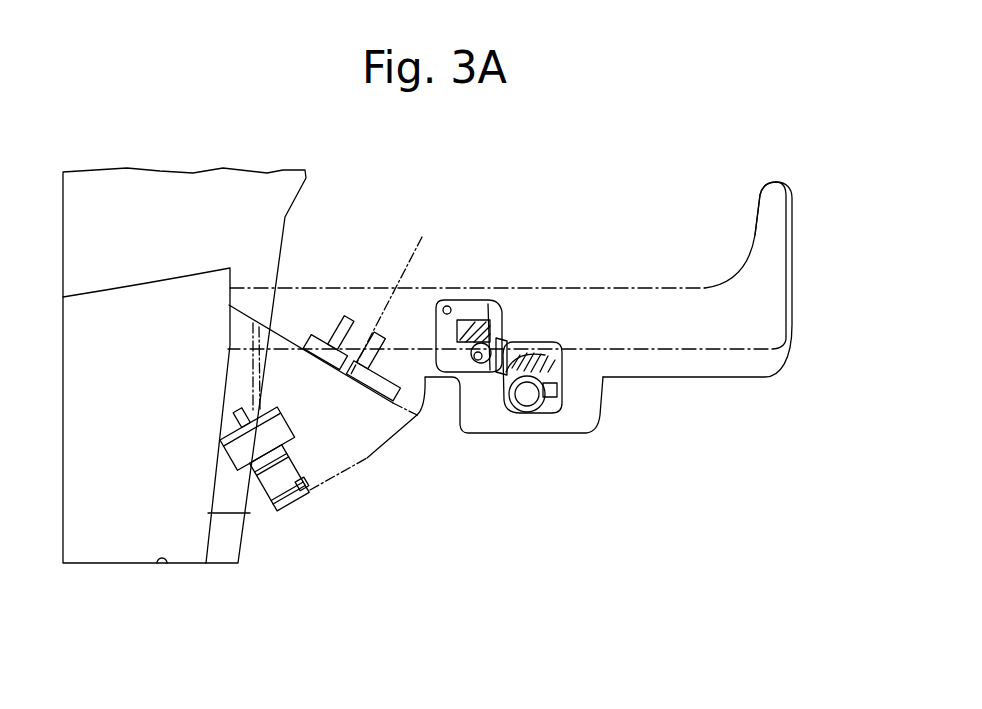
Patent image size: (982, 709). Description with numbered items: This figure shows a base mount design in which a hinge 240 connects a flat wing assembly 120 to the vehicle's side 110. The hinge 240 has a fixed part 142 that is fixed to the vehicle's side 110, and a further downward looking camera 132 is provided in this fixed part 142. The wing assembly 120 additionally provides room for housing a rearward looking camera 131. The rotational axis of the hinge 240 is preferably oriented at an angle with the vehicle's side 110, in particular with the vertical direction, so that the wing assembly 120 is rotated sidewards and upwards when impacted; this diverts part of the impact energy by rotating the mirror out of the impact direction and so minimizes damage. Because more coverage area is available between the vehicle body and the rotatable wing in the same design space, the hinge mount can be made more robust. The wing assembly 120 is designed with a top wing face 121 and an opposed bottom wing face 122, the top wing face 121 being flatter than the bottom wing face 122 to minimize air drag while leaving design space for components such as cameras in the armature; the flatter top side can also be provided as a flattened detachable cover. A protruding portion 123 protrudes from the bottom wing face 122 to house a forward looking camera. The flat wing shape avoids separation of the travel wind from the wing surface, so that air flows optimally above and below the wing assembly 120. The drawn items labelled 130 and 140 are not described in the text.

The vehicle's side 110 is at (212, 237).
The wing assembly 120 is at (744, 328).
The top wing face 121 is at (622, 287).
The bottom wing face 122 is at (700, 368).
The protruding portion 123 is at (600, 382).
The first sensor 130 is at (553, 410).
The rearward looking camera 131 is at (470, 307).
The downward looking camera 132 is at (297, 510).
The fastening axis 140 is at (413, 257).
The fixed part 142 is at (367, 458).
The hinge 240 is at (355, 421).